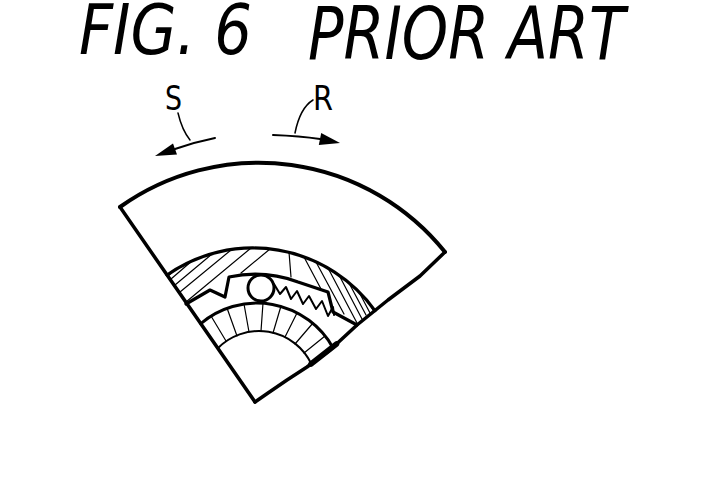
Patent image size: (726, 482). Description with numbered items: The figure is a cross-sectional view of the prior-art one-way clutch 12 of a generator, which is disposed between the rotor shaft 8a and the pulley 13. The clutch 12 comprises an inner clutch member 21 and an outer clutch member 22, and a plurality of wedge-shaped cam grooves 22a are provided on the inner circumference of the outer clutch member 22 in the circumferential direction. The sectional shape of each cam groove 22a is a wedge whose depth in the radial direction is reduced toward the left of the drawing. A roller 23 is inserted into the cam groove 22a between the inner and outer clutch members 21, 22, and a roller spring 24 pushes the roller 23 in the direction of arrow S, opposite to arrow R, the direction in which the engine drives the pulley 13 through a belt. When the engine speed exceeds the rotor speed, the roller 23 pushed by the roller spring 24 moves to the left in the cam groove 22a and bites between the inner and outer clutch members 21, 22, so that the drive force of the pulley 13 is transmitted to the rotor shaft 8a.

The rotor shaft 8a is at (268, 368).
The one-way clutch 12 is at (192, 286).
The pulley 13 is at (403, 208).
The inner clutch member 21 is at (200, 342).
The outer clutch member 22 is at (344, 290).
The wedge-shaped cam groove 22a is at (333, 265).
The roller 23 is at (257, 274).
The roller spring 24 is at (342, 345).